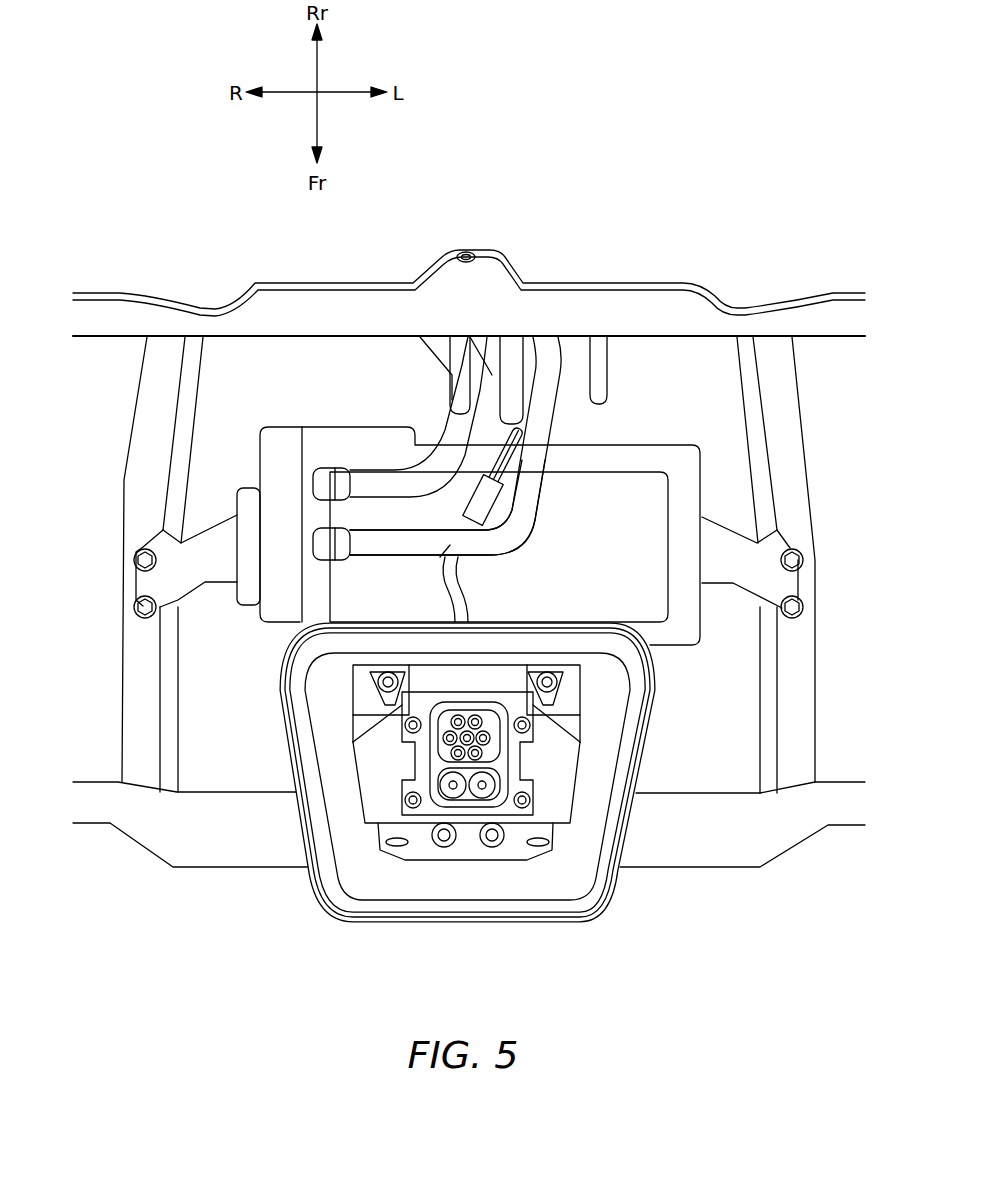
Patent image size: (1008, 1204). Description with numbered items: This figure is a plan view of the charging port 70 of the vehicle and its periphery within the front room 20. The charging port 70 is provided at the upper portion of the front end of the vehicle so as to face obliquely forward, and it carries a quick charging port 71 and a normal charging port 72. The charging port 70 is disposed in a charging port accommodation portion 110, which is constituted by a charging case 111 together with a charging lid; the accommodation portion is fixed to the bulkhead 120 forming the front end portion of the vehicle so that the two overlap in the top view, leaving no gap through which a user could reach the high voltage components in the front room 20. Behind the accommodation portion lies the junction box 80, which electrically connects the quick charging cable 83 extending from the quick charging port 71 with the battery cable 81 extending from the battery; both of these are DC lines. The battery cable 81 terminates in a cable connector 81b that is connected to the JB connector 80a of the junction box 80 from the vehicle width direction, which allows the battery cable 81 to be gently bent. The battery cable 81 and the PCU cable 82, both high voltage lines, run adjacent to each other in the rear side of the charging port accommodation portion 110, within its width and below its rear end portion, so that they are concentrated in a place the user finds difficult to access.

The front room 20 is at (236, 670).
The charging port 70 is at (499, 823).
The quick charging port 71 is at (500, 747).
The normal charging port 72 is at (447, 797).
The junction box 80 is at (630, 497).
The JB connector 80a is at (322, 548).
The battery cable 81 is at (548, 458).
The cable connector 81b is at (378, 550).
The PCU cable 82 is at (358, 482).
The quick charging cable 83 is at (470, 600).
The charging port accommodation portion 110 is at (312, 889).
The charging case 111 is at (477, 793).
The bulkhead 120 is at (715, 842).